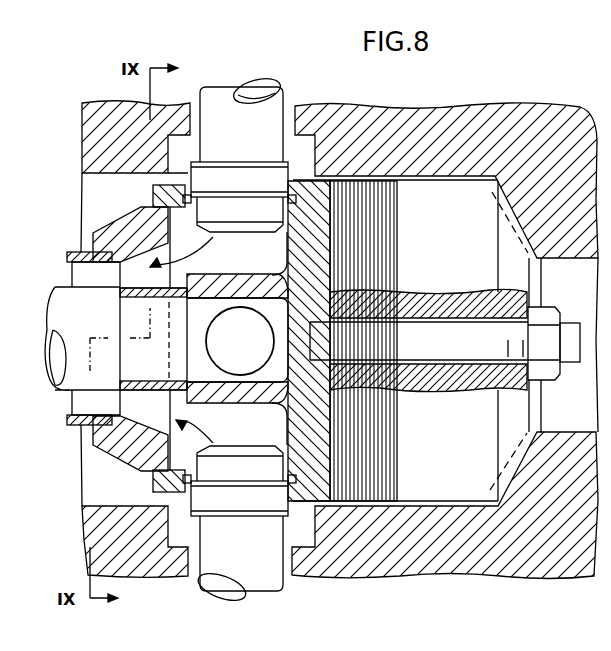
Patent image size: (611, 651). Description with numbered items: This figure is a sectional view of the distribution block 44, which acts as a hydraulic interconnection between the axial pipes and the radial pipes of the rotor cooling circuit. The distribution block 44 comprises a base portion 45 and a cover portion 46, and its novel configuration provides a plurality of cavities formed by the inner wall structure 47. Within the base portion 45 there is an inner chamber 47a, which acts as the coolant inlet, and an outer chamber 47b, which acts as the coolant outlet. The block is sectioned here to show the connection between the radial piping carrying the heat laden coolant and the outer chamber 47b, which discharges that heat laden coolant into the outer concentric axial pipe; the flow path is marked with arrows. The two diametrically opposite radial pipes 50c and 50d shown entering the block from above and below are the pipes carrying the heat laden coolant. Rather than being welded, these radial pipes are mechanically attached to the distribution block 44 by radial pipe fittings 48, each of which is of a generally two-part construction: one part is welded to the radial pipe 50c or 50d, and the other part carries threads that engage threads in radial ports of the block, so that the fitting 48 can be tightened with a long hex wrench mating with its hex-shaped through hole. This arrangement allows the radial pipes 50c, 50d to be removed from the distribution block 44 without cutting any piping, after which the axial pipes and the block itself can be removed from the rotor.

The distribution block 44 is at (400, 614).
The base portion 45 is at (160, 480).
The cover portion 46 is at (117, 443).
The inner wall structure 47 is at (257, 287).
The inner chamber 47a is at (284, 326).
The outer chamber 47b is at (278, 258).
The radial pipe fittings 48 is at (205, 215).
The radial pipe 50c is at (263, 90).
The radial pipe 50d is at (267, 580).